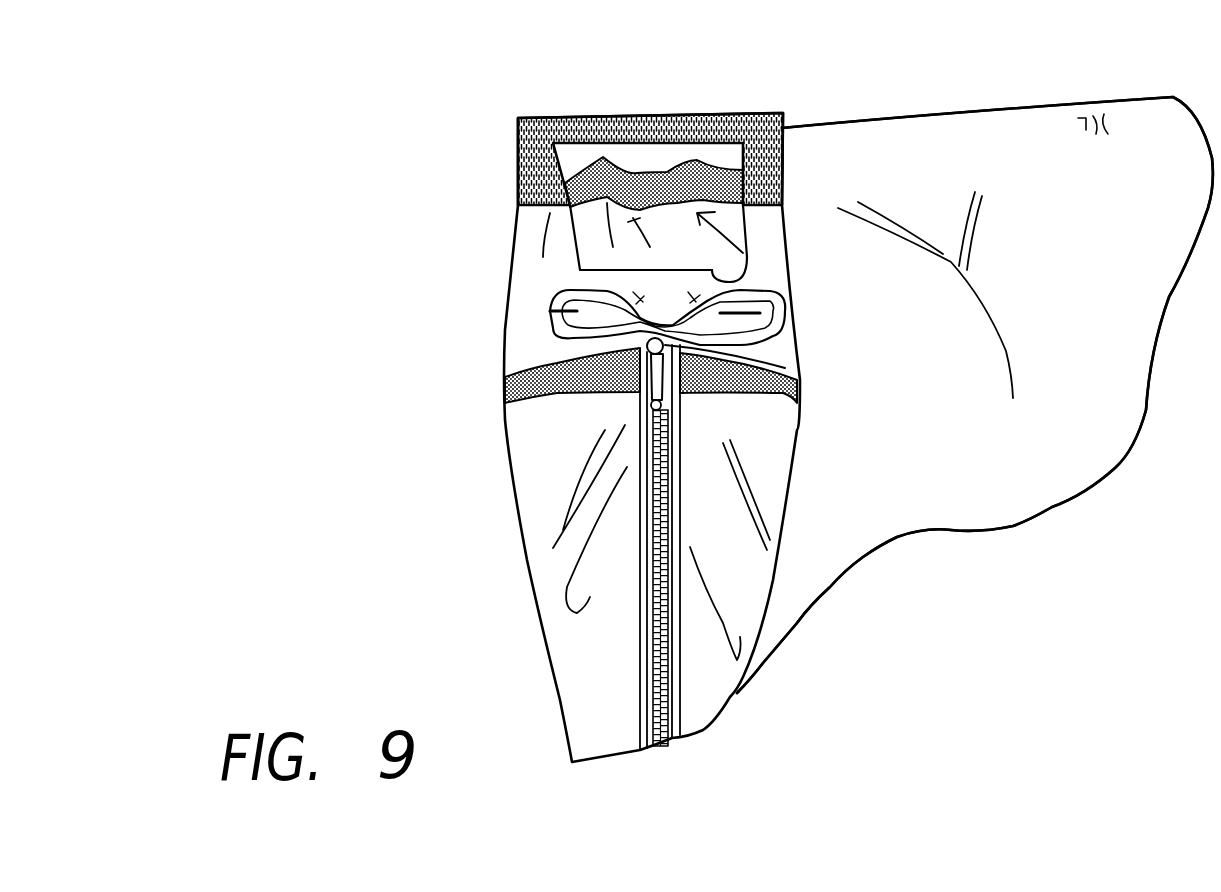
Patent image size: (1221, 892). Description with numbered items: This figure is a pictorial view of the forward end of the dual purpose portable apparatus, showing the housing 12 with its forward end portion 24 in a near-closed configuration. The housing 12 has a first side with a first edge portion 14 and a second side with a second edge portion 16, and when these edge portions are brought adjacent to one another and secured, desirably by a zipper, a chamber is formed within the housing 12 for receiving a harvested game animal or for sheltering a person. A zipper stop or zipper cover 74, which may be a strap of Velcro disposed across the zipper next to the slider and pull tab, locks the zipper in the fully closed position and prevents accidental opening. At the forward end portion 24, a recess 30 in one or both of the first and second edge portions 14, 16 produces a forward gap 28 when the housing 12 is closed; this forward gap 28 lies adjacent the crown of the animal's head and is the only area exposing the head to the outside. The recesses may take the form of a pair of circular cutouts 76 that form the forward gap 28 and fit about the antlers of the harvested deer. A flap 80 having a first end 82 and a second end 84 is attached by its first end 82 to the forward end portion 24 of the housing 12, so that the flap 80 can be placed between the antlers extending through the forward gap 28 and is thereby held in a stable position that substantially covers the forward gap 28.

The housing 12 is at (819, 169).
The forward end portion 24 is at (819, 169).
The first edge portion 14 is at (673, 477).
The second edge portion 16 is at (650, 450).
The forward gap 28 is at (640, 343).
The recess 30 is at (575, 303).
The zipper cover 74 is at (633, 355).
The circular cutouts 76 is at (577, 312).
The flap 80 is at (580, 150).
The first end 82 is at (748, 257).
The second end 84 is at (653, 157).